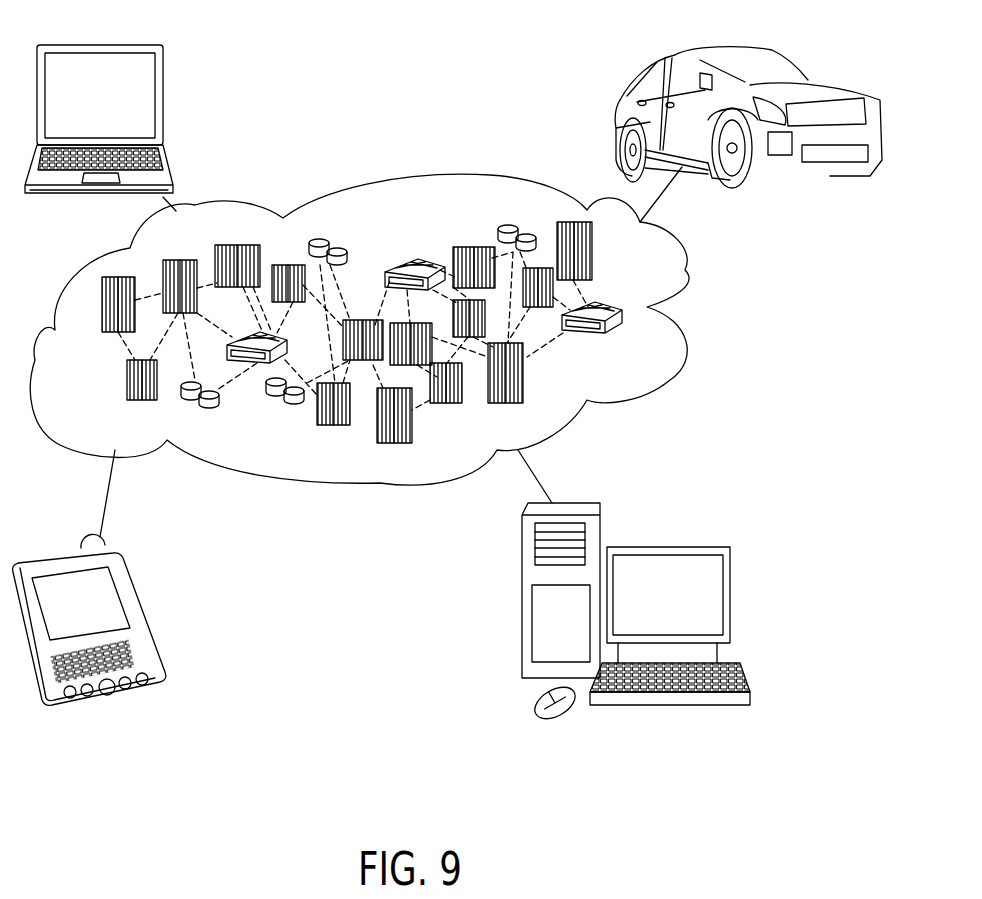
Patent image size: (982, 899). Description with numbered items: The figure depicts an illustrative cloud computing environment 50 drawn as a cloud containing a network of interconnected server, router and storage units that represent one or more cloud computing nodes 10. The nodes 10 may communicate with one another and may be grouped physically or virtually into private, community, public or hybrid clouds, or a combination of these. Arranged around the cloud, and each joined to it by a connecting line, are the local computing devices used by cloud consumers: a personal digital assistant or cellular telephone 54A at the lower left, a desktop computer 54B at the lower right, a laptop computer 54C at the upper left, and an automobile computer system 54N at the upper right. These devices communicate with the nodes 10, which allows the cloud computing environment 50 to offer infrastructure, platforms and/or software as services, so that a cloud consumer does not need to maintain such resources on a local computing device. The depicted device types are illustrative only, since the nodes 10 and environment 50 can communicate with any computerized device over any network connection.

The cloud computing nodes 10 is at (447, 381).
The cloud computing environment 50 is at (685, 260).
The personal digital assistant or cellular telephone 54A is at (132, 597).
The desktop computer 54B is at (730, 593).
The laptop computer 54C is at (164, 97).
The automobile computer system 54N is at (790, 67).